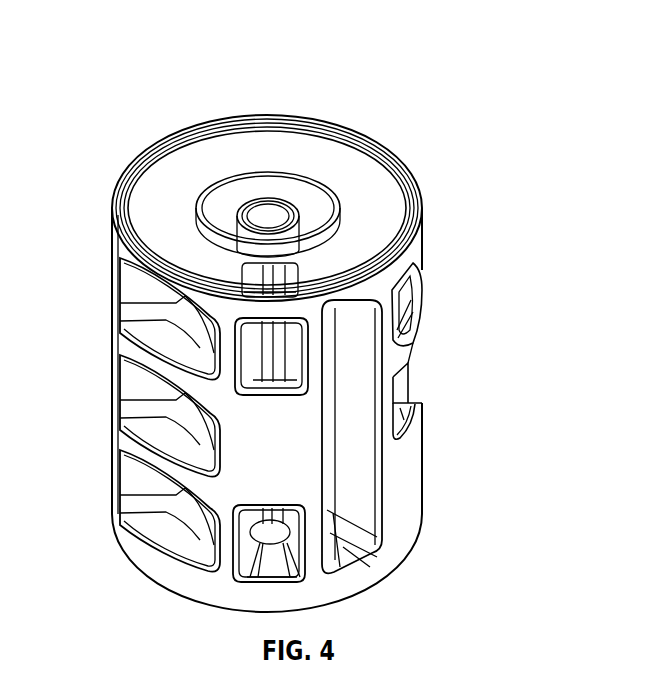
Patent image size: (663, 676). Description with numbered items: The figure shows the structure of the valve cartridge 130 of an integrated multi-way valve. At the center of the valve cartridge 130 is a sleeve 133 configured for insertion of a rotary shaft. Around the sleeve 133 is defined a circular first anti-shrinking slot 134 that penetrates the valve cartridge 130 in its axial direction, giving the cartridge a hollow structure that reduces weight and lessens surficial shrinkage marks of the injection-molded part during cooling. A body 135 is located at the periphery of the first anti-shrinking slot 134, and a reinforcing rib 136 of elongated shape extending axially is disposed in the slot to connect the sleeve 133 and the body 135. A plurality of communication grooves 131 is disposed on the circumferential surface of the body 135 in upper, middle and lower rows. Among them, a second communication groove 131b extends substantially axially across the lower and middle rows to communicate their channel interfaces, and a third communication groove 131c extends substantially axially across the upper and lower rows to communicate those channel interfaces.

The valve cartridge 130 is at (141, 28).
The communication grooves 131 is at (390, 425).
The second communication groove 131b is at (410, 402).
The third communication groove 131c is at (350, 413).
The sleeve 133 is at (278, 210).
The first anti-shrinking slot 134 is at (320, 213).
The body 135 is at (362, 240).
The reinforcing rib 136 is at (228, 243).